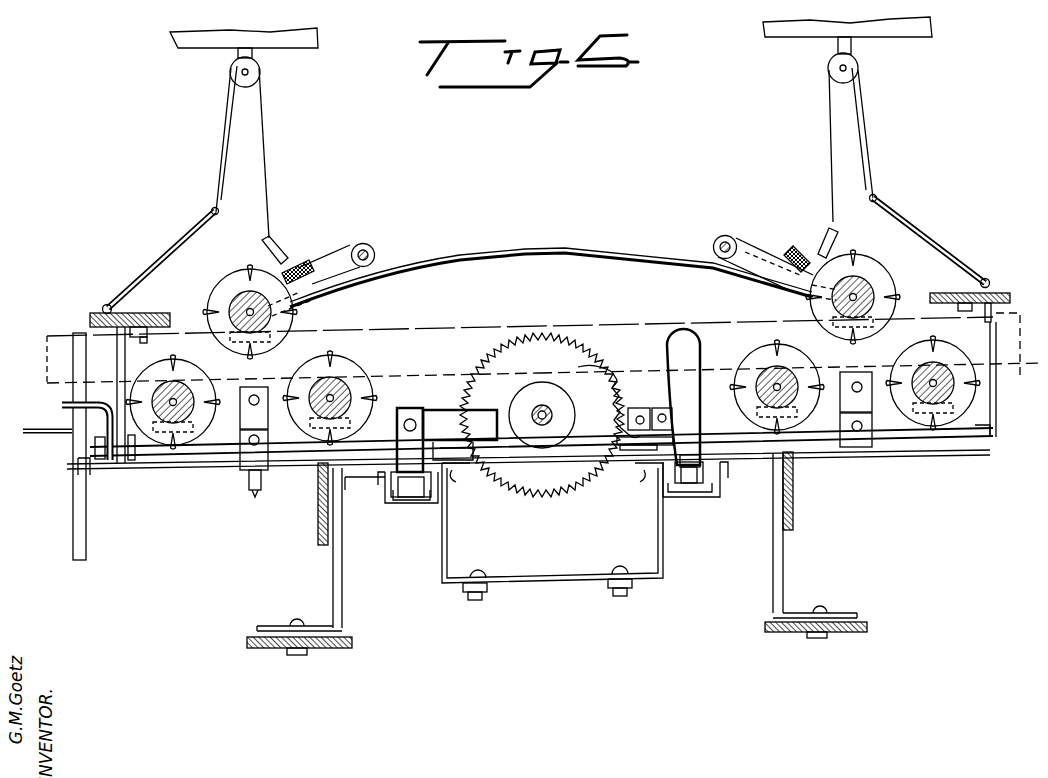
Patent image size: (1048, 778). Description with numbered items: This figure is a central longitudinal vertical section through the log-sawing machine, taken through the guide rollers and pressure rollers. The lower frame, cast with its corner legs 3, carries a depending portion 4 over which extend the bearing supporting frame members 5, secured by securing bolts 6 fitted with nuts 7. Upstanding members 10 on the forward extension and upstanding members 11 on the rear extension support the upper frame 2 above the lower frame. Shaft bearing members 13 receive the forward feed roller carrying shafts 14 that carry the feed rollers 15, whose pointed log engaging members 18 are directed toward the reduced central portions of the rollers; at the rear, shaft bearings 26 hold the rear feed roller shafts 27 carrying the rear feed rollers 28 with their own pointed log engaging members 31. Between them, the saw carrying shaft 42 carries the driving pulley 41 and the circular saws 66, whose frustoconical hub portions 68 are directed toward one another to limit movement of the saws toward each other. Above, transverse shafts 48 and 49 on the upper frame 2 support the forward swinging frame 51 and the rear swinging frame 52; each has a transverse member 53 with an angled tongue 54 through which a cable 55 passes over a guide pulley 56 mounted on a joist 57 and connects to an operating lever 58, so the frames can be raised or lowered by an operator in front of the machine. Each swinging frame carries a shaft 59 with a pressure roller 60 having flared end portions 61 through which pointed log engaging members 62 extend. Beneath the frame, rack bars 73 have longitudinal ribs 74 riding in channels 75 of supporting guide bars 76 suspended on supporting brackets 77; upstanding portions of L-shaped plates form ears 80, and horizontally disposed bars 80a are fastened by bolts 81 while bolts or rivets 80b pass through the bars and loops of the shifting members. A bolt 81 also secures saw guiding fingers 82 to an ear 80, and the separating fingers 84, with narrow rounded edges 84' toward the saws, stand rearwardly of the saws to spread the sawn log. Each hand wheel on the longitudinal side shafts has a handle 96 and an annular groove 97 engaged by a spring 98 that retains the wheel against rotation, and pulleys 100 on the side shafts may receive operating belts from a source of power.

The upper frame 2 is at (495, 253).
The corner legs 3 is at (343, 580).
The depending portion 4 is at (658, 540).
The bearing supporting frame members 5 is at (622, 460).
The securing bolts 6 is at (452, 483).
The nuts 7 is at (462, 450).
The upstanding members 10 is at (118, 357).
The upstanding members 11 is at (992, 398).
The shaft bearing members 13 is at (232, 375).
The forward feed roller carrying shafts 14 is at (182, 398).
The feed rollers 15 is at (347, 350).
The pointed log engaging members 18 is at (321, 367).
The shaft bearings 26 is at (887, 357).
The rear feed roller shafts 27 is at (767, 368).
The rear feed rollers 28 is at (738, 386).
The pointed log engaging members 31 is at (778, 338).
The driving pulley 41 is at (667, 380).
The saw carrying shaft 42 is at (542, 426).
The transverse shaft 48 is at (377, 251).
The transverse shaft 49 is at (727, 245).
The forward swinging frame 51 is at (368, 243).
The rear swinging frame 52 is at (752, 250).
The transverse member 53 is at (300, 268).
The tongue 54 is at (283, 258).
The cable 55 is at (270, 160).
The guide pulley 56 is at (256, 74).
The joist 57 is at (193, 40).
The operating lever 58 is at (185, 243).
The shaft 59 is at (245, 380).
The pressure roller 60 is at (290, 321).
The flared end portions 61 is at (877, 273).
The pointed log engaging members 62 is at (817, 298).
The circular saws 66 is at (530, 478).
The hub portions 68 is at (563, 400).
The rack bars 73 is at (413, 497).
The longitudinal ribs 74 is at (398, 500).
The channels 75 is at (390, 518).
The supporting guide bars 76 is at (440, 508).
The supporting brackets 77 is at (395, 516).
The ears 80 is at (385, 478).
The horizontally disposed bars 80a is at (627, 430).
The bolts or rivets 80b is at (591, 394).
The bolts 81 is at (417, 425).
The saw guiding fingers 82 is at (473, 420).
The separating fingers 84 is at (698, 397).
The narrow rounded edges 84' is at (701, 379).
The handle 96 is at (32, 430).
The annular groove 97 is at (72, 473).
The spring 98 is at (62, 404).
The pulleys 100 is at (258, 490).